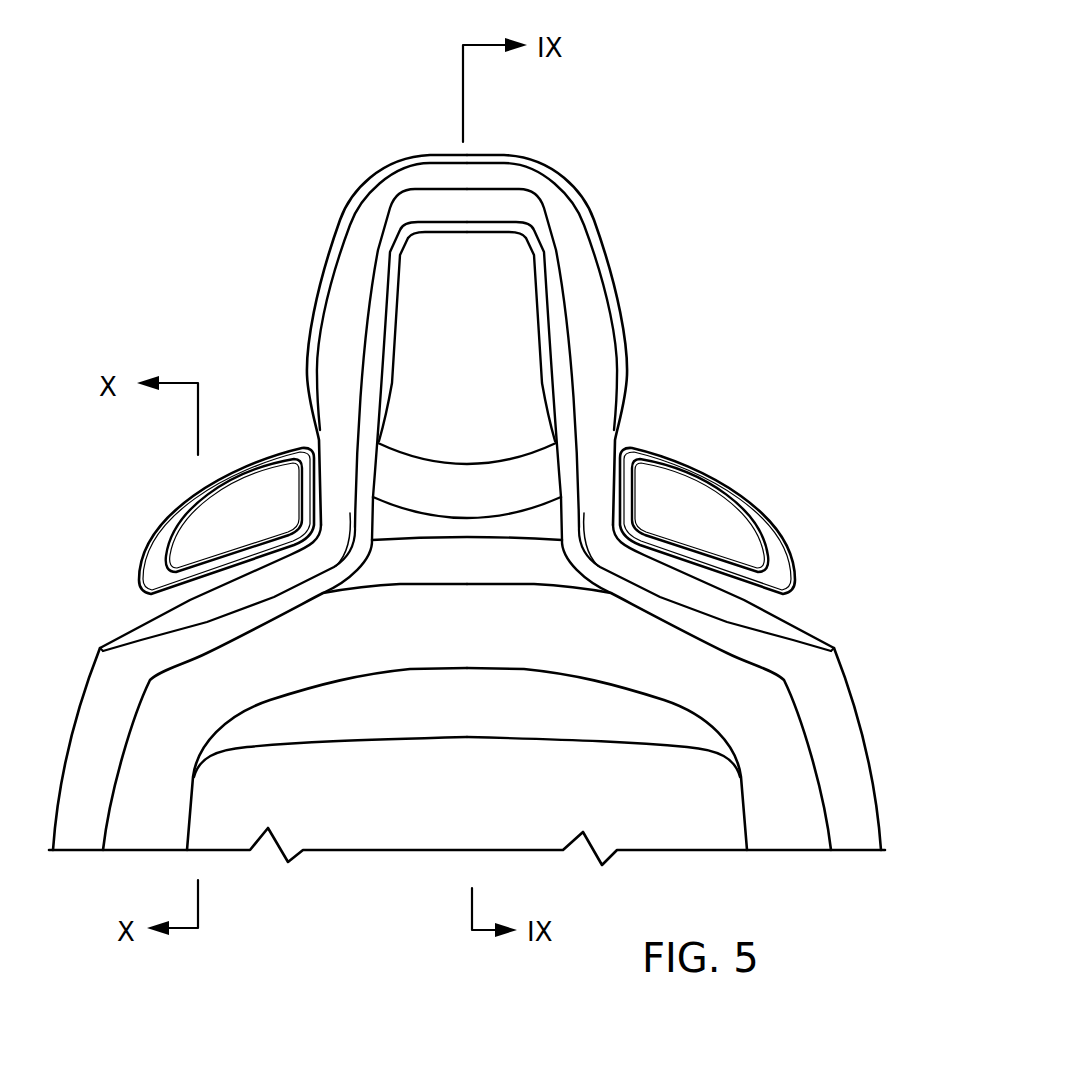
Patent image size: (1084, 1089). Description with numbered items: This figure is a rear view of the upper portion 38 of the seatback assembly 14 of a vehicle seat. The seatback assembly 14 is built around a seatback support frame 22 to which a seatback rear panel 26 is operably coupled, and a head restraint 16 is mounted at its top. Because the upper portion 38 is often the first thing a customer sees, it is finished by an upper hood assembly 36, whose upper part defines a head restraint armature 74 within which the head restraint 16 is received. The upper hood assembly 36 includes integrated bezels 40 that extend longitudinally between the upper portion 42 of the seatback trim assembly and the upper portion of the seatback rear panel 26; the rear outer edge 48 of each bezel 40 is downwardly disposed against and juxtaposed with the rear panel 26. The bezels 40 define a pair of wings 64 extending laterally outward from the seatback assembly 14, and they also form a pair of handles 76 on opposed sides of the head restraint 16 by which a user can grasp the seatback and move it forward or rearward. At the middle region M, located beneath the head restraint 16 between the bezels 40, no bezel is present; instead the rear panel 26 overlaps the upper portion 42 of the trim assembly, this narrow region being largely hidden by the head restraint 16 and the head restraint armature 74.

The seatback assembly 14 is at (805, 132).
The head restraint 16 is at (505, 258).
The seatback support frame 22 is at (503, 157).
The seatback rear panel 26 is at (790, 787).
The upper hood assembly 36 is at (343, 170).
The upper portion of the seatback assembly 38 is at (797, 603).
The bezel 40 is at (242, 582).
The upper portion of the seatback trim assembly 42 is at (632, 593).
The rear outer edge 48 is at (288, 593).
The wings 64 is at (120, 625).
The head restraint armature 74 is at (627, 312).
The handles 76 is at (265, 458).
The middle region M is at (438, 570).